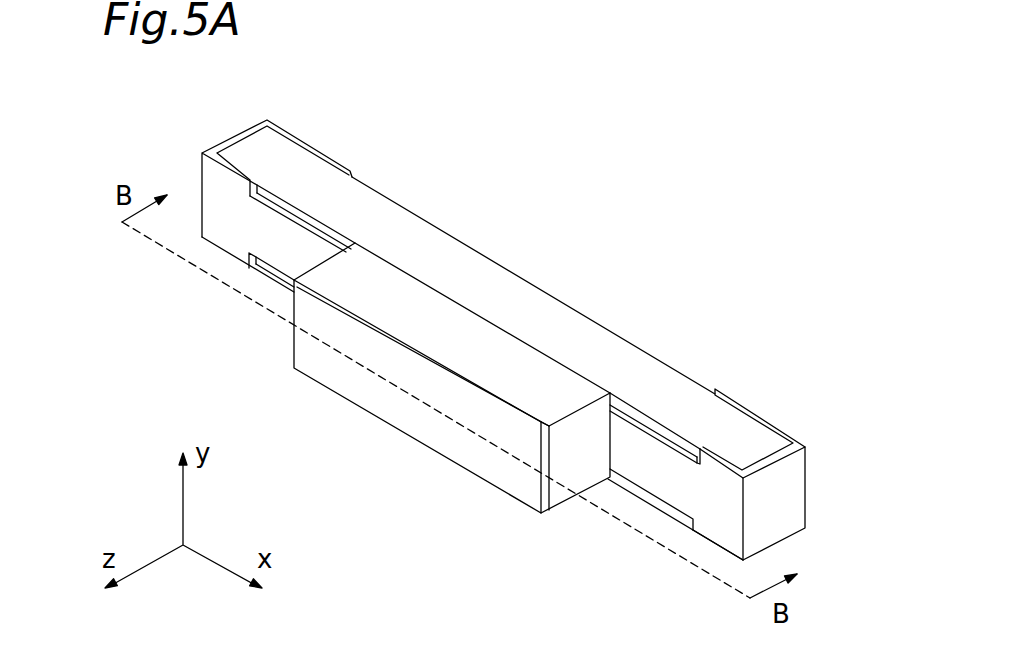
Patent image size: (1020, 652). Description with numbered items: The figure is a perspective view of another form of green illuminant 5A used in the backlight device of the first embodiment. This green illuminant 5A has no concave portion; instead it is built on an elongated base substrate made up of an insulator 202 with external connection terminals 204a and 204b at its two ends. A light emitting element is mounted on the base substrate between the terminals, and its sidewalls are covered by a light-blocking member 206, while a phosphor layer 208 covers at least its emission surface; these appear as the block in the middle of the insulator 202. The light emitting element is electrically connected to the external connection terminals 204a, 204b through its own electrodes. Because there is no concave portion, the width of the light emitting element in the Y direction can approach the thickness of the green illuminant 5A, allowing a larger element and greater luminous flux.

The green illuminant 5A is at (740, 298).
The insulator 202 is at (588, 335).
The external connection terminal 204a is at (228, 230).
The external connection terminal 204b is at (718, 517).
The light-blocking member 206 is at (448, 333).
The phosphor layer 208 is at (452, 363).